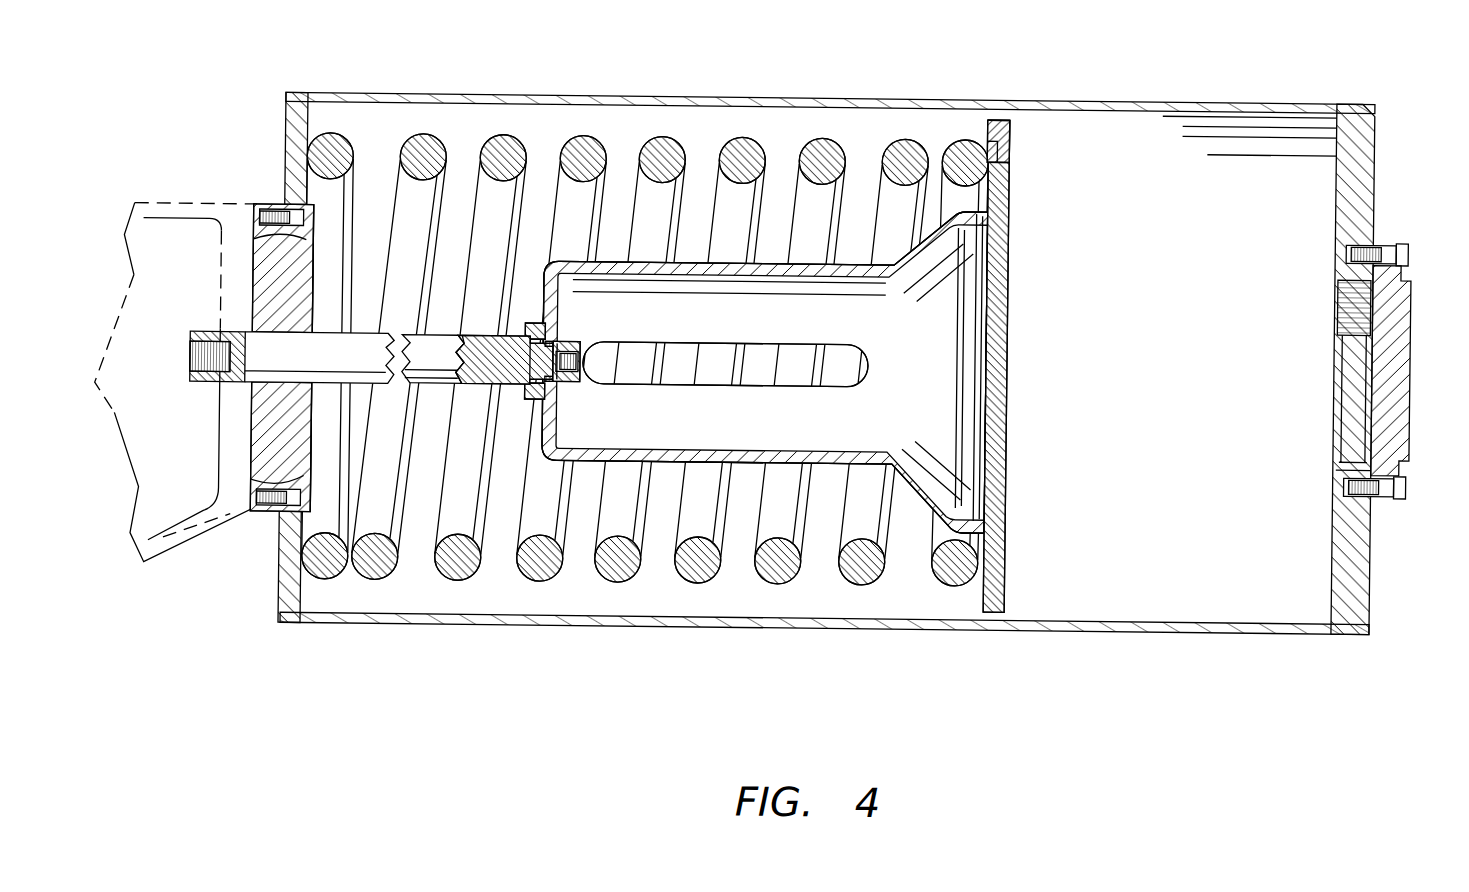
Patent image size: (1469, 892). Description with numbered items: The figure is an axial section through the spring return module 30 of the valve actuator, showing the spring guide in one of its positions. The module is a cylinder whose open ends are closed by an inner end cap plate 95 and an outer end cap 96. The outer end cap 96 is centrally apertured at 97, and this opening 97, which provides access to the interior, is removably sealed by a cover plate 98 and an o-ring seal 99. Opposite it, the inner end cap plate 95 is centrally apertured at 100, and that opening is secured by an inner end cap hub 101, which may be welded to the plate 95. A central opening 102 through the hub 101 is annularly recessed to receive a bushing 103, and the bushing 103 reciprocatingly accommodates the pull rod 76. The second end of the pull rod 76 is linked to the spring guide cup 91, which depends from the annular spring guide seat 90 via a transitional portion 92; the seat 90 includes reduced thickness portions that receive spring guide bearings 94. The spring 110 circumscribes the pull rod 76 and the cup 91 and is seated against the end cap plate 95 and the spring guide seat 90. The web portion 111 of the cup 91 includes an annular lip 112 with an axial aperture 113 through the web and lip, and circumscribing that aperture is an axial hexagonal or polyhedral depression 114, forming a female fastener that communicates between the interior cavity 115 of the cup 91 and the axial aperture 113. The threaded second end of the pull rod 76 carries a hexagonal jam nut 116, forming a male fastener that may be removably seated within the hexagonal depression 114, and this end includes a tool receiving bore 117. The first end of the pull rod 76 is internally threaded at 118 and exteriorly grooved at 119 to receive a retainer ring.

The spring return module 30 is at (810, 97).
The spring 110 is at (588, 150).
The spring guide bearings 94 is at (985, 130).
The outer end cap 96 is at (1372, 161).
The central aperture 100 is at (270, 242).
The inner end cap hub 101 is at (318, 263).
The web portion 111 is at (545, 302).
The pull rod 76 is at (437, 337).
The hexagonal depression 114 is at (530, 338).
The axial aperture 113 is at (577, 340).
The tool receiving bore 117 is at (580, 363).
The interior cavity 115 is at (748, 326).
The exterior groove 119 is at (205, 337).
The internal threads 118 is at (192, 366).
The central opening 102 is at (310, 337).
The bushing 103 is at (268, 398).
The hexagonal jam nut 116 is at (575, 398).
The annular lip 112 is at (535, 403).
The spring guide seat 90 is at (728, 465).
The spring guide cup 91 is at (805, 465).
The transitional portion 92 is at (930, 500).
The inner end cap plate 95 is at (283, 595).
The cover plate 98 is at (1412, 352).
The central aperture 97 is at (1352, 463).
The o-ring seal 99 is at (1340, 470).